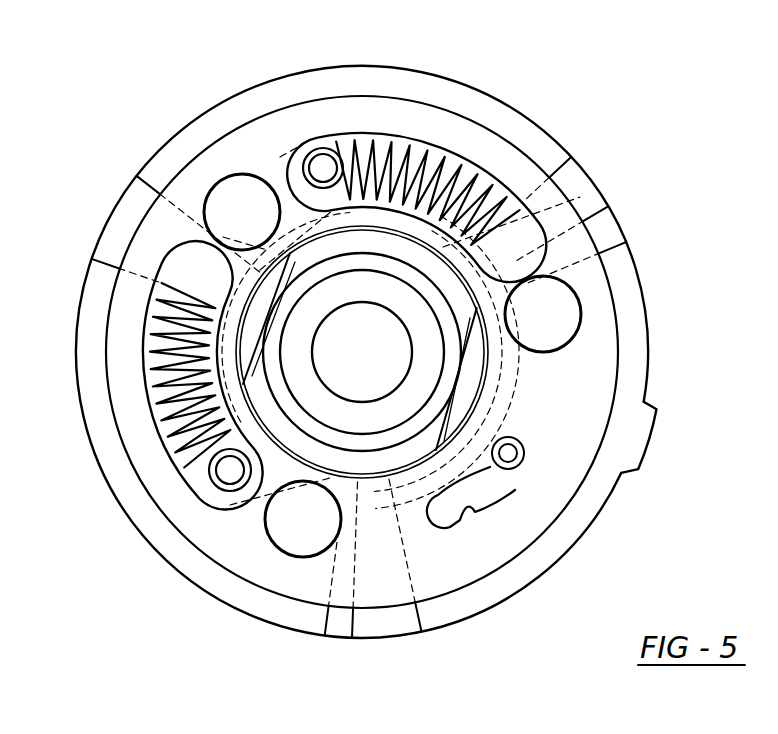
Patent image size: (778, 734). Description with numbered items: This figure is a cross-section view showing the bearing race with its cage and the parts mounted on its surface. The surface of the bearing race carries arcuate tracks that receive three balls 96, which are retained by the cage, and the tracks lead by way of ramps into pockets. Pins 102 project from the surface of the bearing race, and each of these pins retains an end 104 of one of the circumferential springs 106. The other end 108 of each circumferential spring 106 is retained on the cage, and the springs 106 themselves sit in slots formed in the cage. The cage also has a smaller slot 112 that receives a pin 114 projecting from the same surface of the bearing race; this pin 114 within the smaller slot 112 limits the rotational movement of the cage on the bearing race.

The balls 96 is at (560, 308).
The pins 102 is at (313, 150).
The end of the circumferential spring 104 is at (343, 193).
The circumferential springs 106 is at (465, 172).
The other end of the circumferential spring 108 is at (540, 222).
The smaller slot 112 is at (467, 500).
The pin 114 is at (517, 460).